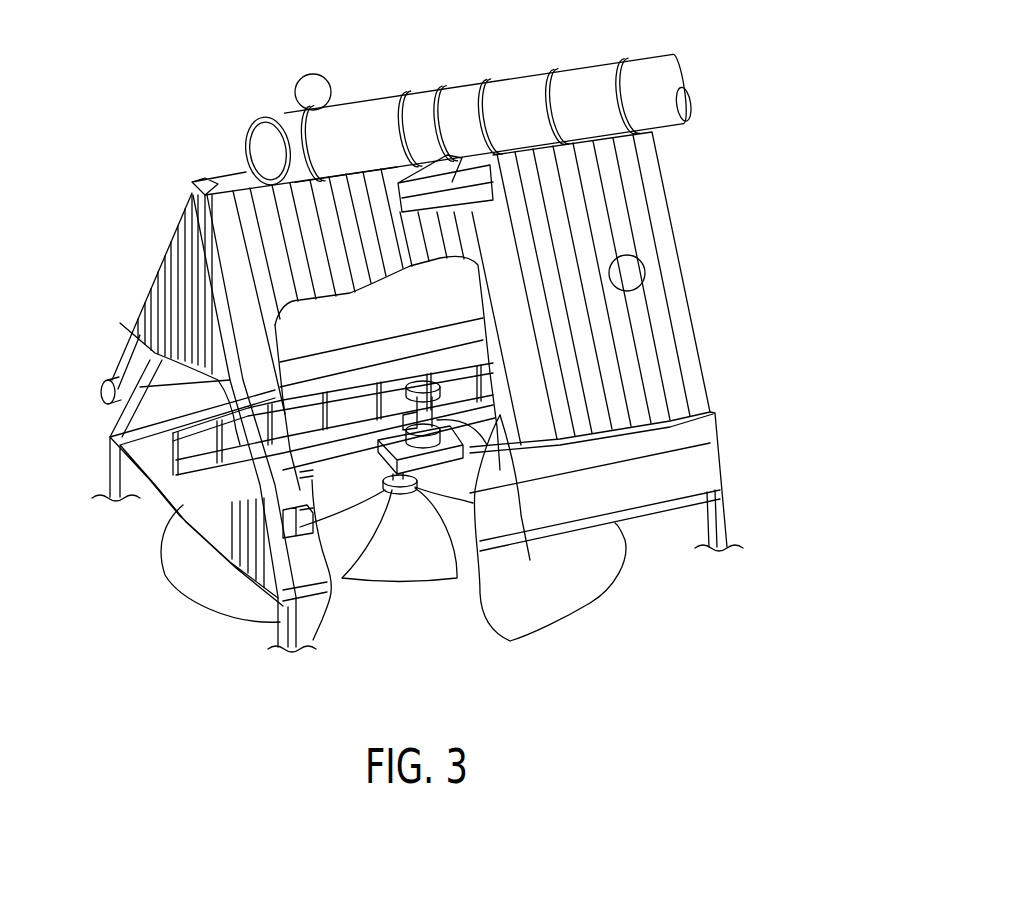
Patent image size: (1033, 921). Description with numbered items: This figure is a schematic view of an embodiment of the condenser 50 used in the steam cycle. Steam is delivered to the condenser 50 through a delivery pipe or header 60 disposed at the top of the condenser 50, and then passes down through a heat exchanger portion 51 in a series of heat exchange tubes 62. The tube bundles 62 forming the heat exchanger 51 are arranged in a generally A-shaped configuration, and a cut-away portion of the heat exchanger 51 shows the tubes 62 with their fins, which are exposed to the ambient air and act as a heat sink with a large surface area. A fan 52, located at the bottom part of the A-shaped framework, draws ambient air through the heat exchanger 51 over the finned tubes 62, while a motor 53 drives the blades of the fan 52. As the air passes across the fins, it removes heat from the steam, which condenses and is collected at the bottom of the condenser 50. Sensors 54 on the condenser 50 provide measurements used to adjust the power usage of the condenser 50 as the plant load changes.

The condenser 50 is at (147, 120).
The heat exchanger portion 51 is at (151, 264).
The fan 52 is at (402, 596).
The motor 53 is at (530, 560).
The sensors 54 is at (305, 72).
The delivery pipe or header 60 is at (640, 58).
The heat exchange tubes 62 is at (688, 330).